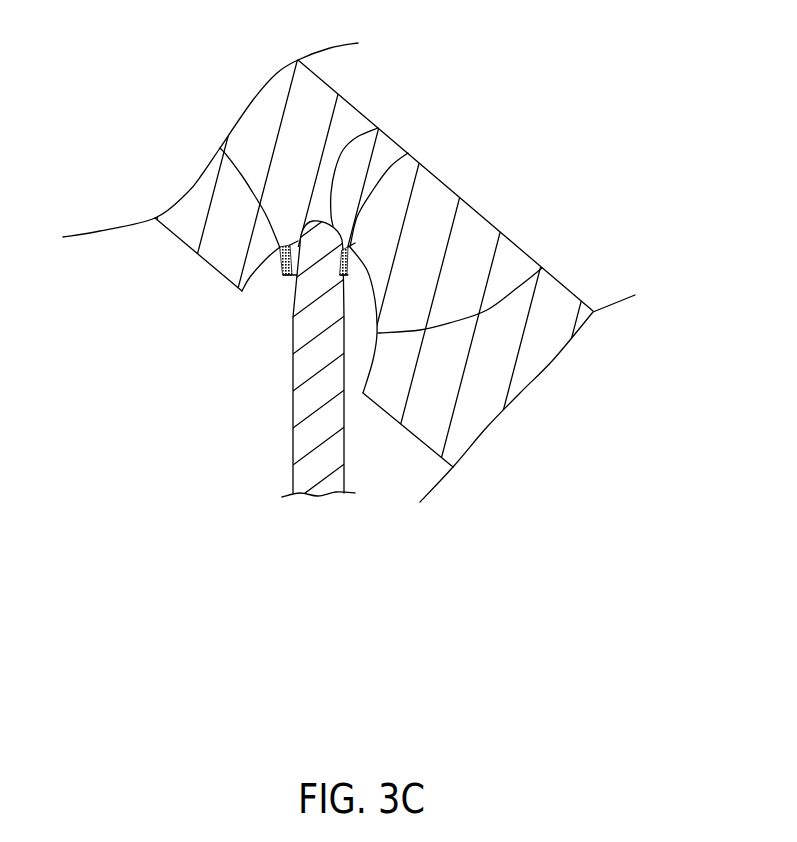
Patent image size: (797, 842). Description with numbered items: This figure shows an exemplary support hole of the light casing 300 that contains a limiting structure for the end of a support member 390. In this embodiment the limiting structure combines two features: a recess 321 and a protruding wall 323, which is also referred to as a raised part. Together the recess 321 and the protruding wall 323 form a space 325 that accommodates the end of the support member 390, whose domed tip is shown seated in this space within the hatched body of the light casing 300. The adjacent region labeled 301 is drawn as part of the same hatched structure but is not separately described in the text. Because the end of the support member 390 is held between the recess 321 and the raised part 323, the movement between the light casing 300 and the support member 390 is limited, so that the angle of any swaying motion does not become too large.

The light casing 300 is at (420, 210).
The base layer 301 is at (542, 268).
The recess 321 is at (375, 125).
The protruding wall 323 is at (220, 148).
The space 325 is at (408, 153).
The support member 390 is at (302, 295).